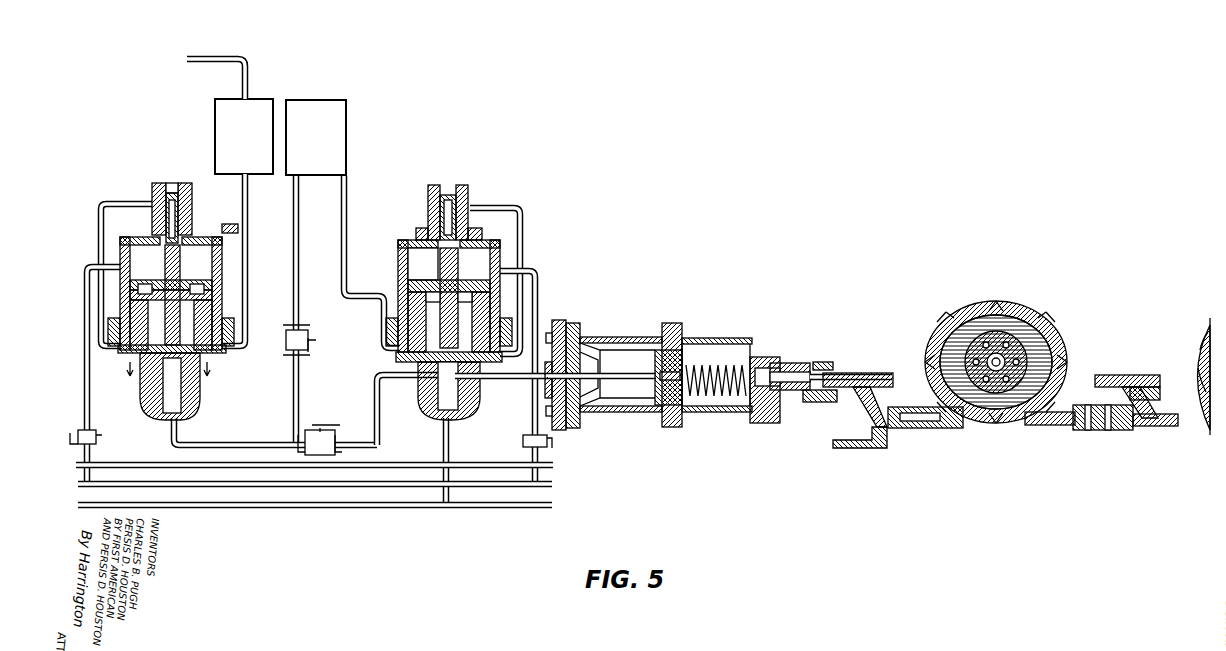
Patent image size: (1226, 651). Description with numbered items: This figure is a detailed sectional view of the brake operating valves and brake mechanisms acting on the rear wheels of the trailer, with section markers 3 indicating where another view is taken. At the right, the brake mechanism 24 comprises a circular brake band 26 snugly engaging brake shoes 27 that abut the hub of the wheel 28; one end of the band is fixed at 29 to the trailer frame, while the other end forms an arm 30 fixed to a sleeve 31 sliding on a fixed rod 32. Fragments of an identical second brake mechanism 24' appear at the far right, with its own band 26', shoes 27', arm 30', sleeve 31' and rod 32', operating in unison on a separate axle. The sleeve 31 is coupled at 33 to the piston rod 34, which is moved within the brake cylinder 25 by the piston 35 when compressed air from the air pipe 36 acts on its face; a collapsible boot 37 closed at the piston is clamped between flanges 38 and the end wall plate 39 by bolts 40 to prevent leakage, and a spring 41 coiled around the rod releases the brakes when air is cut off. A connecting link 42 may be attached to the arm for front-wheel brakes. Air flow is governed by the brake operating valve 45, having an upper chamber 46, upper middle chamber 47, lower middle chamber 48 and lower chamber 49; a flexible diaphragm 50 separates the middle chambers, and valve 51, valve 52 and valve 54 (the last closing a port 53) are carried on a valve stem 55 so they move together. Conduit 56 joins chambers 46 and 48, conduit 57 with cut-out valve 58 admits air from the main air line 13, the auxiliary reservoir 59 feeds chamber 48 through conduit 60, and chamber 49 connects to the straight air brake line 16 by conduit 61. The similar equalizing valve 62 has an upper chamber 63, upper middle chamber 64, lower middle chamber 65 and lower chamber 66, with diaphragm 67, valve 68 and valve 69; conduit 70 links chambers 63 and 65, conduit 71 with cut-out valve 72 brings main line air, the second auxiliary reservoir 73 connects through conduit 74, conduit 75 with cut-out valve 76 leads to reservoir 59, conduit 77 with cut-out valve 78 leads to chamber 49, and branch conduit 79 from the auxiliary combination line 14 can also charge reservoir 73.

The section line 3 is at (168, 369).
The main air line 13 is at (556, 484).
The auxiliary combination line 14 is at (553, 465).
The straight air brake line 16 is at (556, 507).
The brake mechanism 24 is at (986, 358).
The second brake mechanism 24' is at (1186, 360).
The brake cylinder 25 is at (645, 412).
The brake band 26 is at (1009, 360).
The opposite wheel rim 26' is at (1185, 331).
The brake shoes 27 is at (1038, 355).
The opposite wheel hub 27' is at (1184, 365).
The wheel 28 is at (1010, 332).
The fixed end 29 is at (1110, 432).
The arm 30 is at (854, 408).
The opposite bracket 30' is at (1145, 431).
The sleeve 31 is at (844, 354).
The opposite arm 31' is at (1127, 362).
The fixed rod 32 is at (893, 383).
The opposite support member 32' is at (1151, 384).
The coupling 33 is at (780, 364).
The piston rod 34 is at (712, 356).
The piston 35 is at (682, 362).
The air pipe 36 is at (628, 382).
The collapsible boot 37 is at (612, 340).
The flanges 38 is at (582, 326).
The end wall plate 39 is at (552, 362).
The bolts 40 is at (560, 320).
The spring 41 is at (726, 402).
The connecting link 42 is at (855, 448).
The brake operating valve 45 is at (410, 232).
The upper chamber 46 is at (432, 198).
The upper middle chamber 47 is at (412, 265).
The lower middle chamber 48 is at (441, 327).
The lower chamber 49 is at (470, 380).
The flexible diaphragm 50 is at (484, 322).
The valve 51 is at (460, 270).
The valve 52 is at (470, 319).
The port 53 is at (430, 410).
The valve 54 is at (470, 402).
The valve stem 55 is at (444, 332).
The conduit 56 is at (521, 209).
The fluid conduit 57 is at (542, 276).
The cut-out valve 58 is at (522, 440).
The auxiliary reservoir 59 is at (332, 146).
The conduit 60 is at (345, 200).
The conduit 61 is at (450, 449).
The equalizing valve 62 is at (148, 190).
The upper chamber 63 is at (183, 209).
The upper middle chamber 64 is at (138, 240).
The lower middle chamber 65 is at (163, 330).
The lower chamber 66 is at (203, 368).
The flexible diaphragm 67 is at (200, 281).
The valve 68 is at (180, 270).
The valve 69 is at (178, 342).
The conduit 70 is at (100, 233).
The fluid conduit 71 is at (86, 378).
The cut-out valve 72 is at (86, 430).
The second auxiliary reservoir 73 is at (262, 146).
The conduit 74 is at (248, 218).
The fluid conduit 75 is at (299, 302).
The cut-out valve 76 is at (310, 332).
The conduit 77 is at (376, 400).
The cut-out valve 78 is at (325, 428).
The branch conduit 79 is at (213, 60).